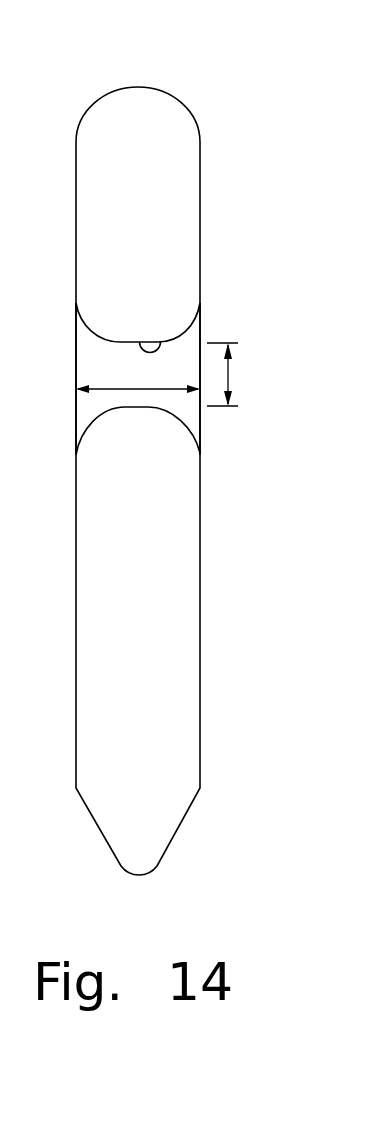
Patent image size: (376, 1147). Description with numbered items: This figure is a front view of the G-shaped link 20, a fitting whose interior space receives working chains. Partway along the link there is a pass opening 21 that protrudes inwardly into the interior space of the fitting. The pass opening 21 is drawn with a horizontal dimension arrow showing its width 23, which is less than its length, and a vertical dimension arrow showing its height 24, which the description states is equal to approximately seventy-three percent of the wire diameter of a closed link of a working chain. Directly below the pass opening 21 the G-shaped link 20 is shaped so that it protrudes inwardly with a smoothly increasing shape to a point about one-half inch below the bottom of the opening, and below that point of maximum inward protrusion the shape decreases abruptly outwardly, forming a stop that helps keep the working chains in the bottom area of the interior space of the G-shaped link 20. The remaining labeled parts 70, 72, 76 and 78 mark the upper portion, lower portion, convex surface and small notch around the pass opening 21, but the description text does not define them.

The G-shaped link 20 is at (61, 78).
The pass opening 21 is at (118, 357).
The width 23 is at (122, 390).
The height 24 is at (228, 372).
The lower portion 70 is at (100, 428).
The upper portion 72 is at (98, 312).
The convex surface 76 is at (145, 407).
The notch 78 is at (158, 342).